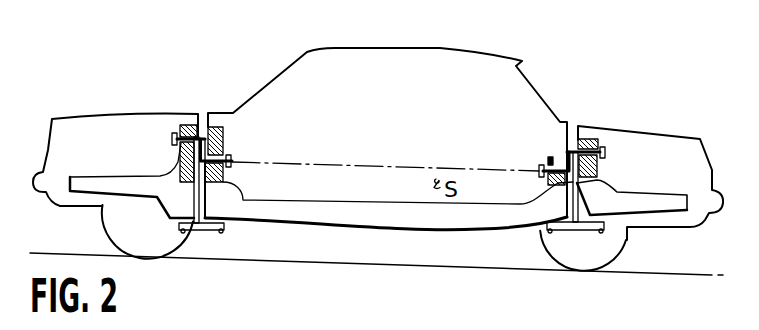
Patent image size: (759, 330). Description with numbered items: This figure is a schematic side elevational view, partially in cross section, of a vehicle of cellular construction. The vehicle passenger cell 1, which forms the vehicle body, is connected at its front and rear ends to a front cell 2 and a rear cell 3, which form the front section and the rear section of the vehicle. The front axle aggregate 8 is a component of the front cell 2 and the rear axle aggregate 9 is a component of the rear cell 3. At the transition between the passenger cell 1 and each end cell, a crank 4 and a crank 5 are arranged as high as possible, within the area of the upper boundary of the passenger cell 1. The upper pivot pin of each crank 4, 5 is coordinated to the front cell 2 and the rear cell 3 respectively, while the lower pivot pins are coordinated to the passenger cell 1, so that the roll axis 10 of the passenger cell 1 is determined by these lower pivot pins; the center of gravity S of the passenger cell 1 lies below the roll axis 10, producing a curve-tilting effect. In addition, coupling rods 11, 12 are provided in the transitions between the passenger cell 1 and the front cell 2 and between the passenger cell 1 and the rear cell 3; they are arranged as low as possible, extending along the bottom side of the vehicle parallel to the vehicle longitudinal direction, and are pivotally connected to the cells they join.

The passenger cell 1 is at (450, 48).
The front cell 2 is at (100, 133).
The rear cell 3 is at (685, 148).
The crank 4 is at (224, 148).
The crank 5 is at (552, 156).
The front axle aggregate 8 is at (147, 182).
The rear axle aggregate 9 is at (657, 203).
The roll axis 10 is at (387, 163).
The coupling rod 11 is at (213, 231).
The coupling rod 12 is at (582, 228).